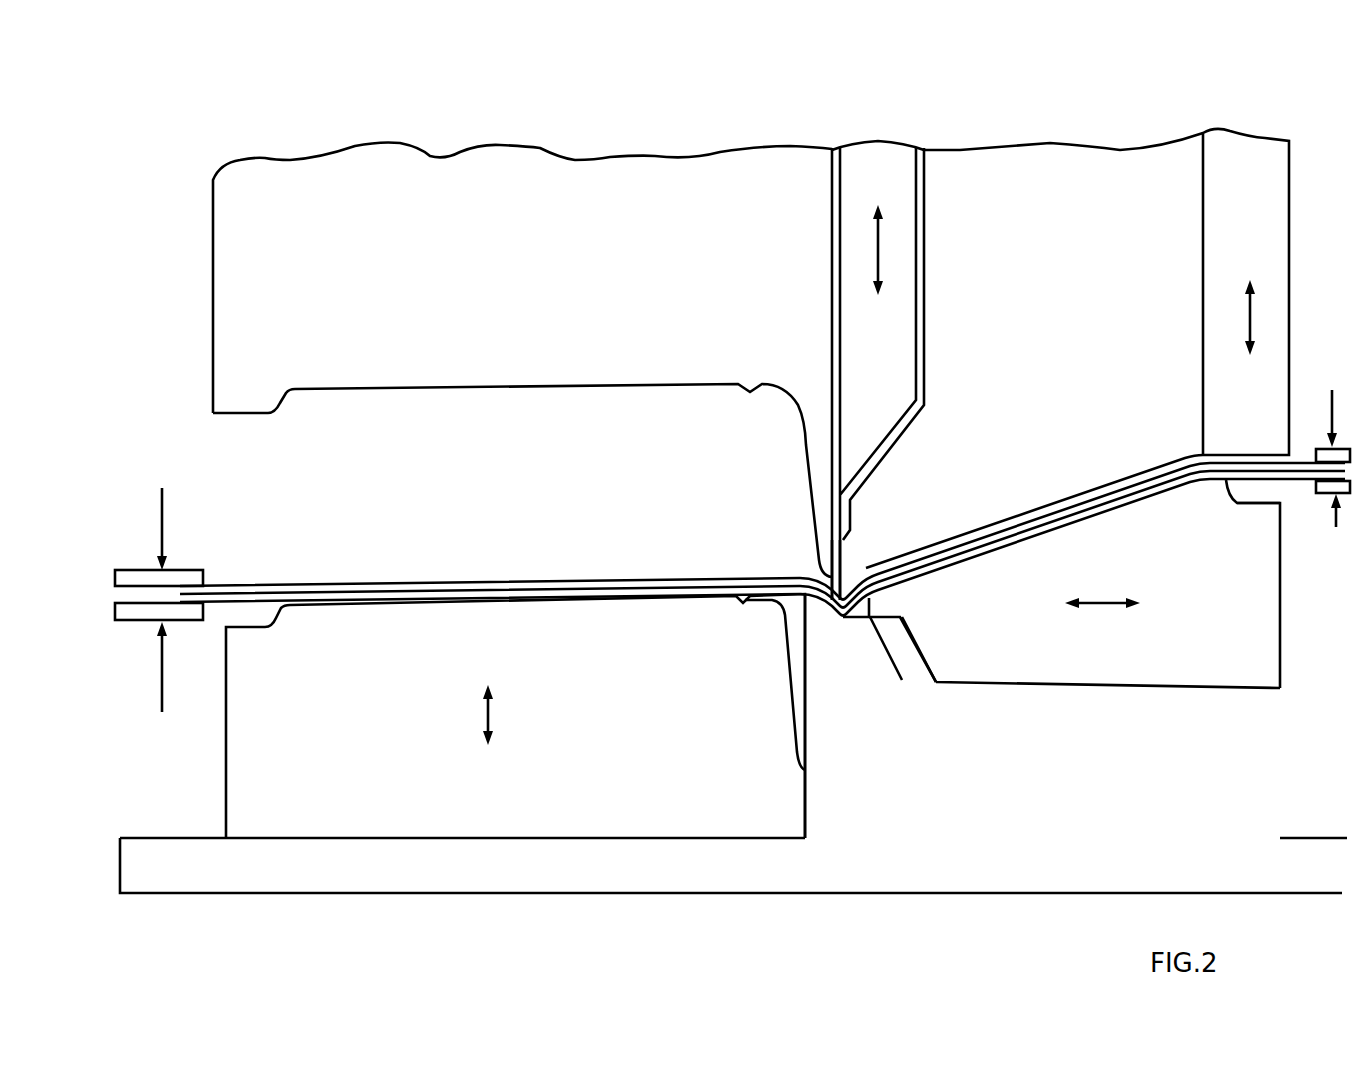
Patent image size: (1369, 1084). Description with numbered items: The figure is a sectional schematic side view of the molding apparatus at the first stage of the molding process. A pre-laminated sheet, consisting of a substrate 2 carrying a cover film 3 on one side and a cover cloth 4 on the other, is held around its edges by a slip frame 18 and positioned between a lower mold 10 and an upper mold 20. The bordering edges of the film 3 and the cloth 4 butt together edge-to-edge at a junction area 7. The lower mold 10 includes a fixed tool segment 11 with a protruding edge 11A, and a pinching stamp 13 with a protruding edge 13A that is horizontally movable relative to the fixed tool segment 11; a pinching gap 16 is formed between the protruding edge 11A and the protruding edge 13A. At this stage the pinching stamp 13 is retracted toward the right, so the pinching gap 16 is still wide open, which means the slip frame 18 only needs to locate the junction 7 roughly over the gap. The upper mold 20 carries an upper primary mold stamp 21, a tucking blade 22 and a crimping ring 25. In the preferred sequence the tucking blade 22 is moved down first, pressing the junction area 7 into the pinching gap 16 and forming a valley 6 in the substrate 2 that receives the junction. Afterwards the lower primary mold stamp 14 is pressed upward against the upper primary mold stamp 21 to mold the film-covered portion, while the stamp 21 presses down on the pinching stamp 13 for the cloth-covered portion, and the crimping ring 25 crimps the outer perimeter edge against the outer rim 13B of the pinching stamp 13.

The substrate 2 is at (540, 581).
The cover film 3 is at (466, 581).
The cover cloth 4 is at (1018, 527).
The valley 6 is at (862, 617).
The junction area 7 is at (851, 565).
The lower mold 10 is at (893, 897).
The fixed tool segment 11 is at (1104, 838).
The protruding edge 11A is at (812, 612).
The pinching stamp 13 is at (1249, 598).
The protruding edge 13A is at (885, 603).
The outer rim 13B is at (1248, 506).
The lower primary mold stamp 14 is at (592, 739).
The pinching gap 16 is at (849, 633).
The slip frame 18 is at (176, 569).
The upper mold 20 is at (803, 105).
The upper primary mold stamp 21 is at (612, 268).
The tucking blade 22 is at (879, 418).
The crimping ring 25 is at (1247, 249).